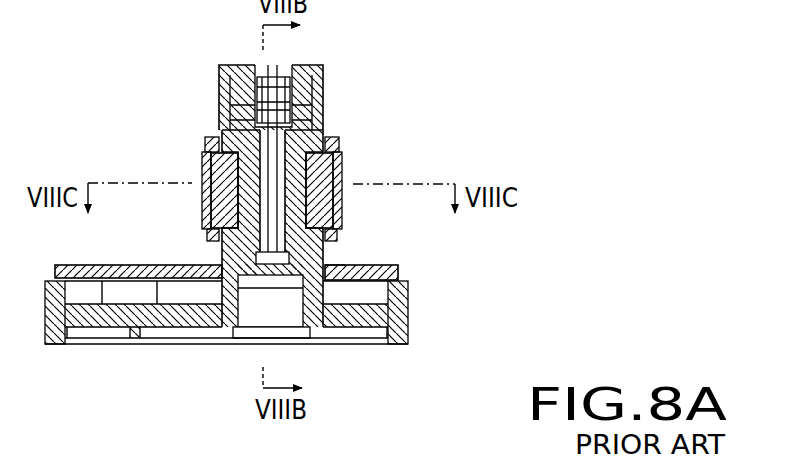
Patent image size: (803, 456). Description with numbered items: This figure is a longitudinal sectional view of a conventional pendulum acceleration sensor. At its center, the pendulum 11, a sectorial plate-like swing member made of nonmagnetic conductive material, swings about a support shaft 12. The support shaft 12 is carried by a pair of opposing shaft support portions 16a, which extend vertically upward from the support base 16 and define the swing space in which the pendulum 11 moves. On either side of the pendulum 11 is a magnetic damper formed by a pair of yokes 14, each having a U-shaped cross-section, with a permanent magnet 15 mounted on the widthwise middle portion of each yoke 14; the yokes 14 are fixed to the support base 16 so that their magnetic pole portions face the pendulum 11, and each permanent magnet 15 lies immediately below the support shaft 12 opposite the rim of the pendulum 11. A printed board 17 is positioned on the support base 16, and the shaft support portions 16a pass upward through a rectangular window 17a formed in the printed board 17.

The pendulum 11 is at (227, 137).
The support shaft 12 is at (323, 90).
The yoke 14 is at (205, 170).
The permanent magnet 15 is at (220, 198).
The support base 16 is at (400, 318).
The shaft support portion 16a is at (223, 125).
The printed board 17 is at (400, 268).
The window 17a is at (330, 263).